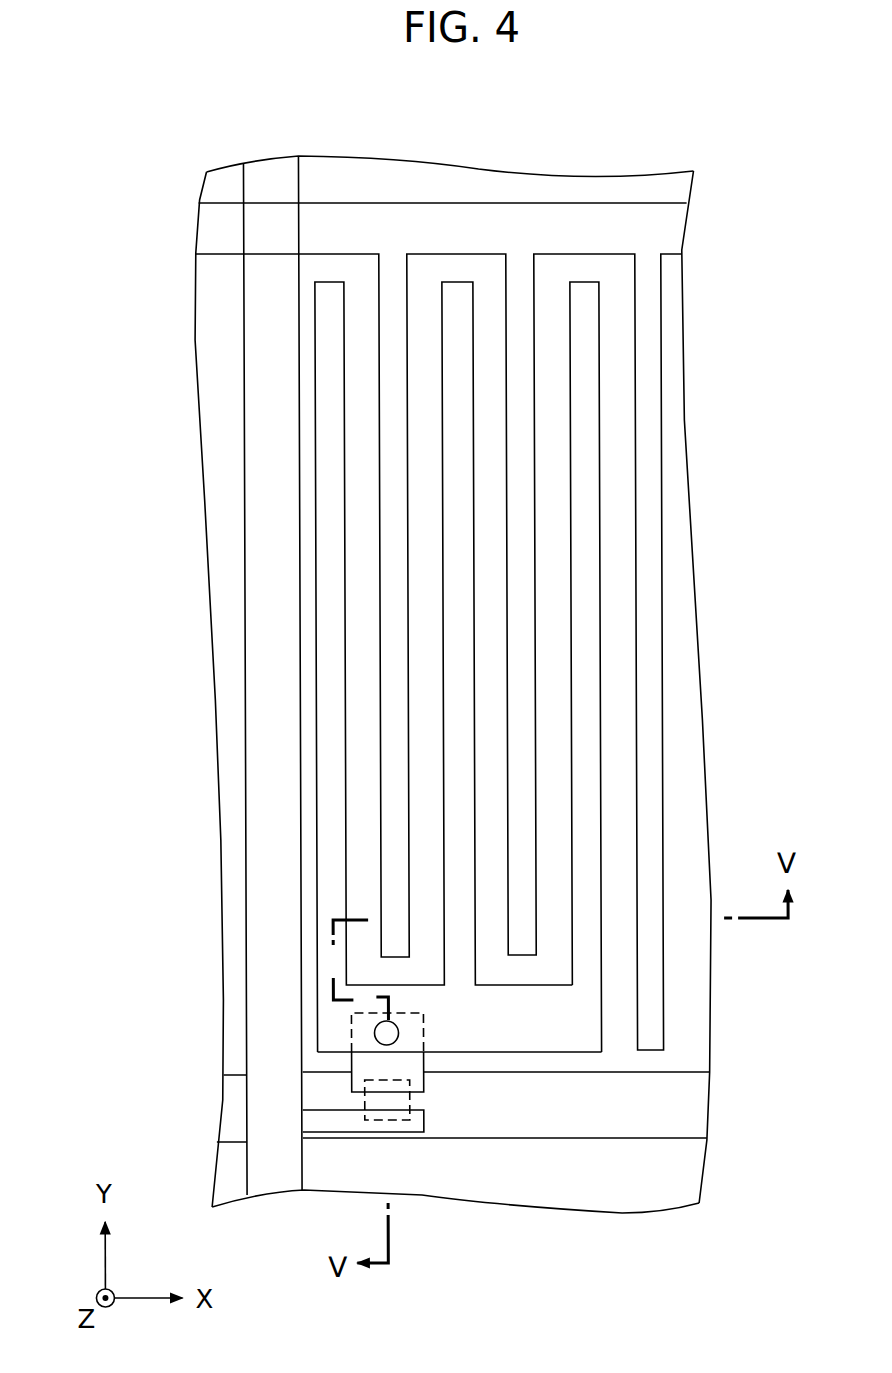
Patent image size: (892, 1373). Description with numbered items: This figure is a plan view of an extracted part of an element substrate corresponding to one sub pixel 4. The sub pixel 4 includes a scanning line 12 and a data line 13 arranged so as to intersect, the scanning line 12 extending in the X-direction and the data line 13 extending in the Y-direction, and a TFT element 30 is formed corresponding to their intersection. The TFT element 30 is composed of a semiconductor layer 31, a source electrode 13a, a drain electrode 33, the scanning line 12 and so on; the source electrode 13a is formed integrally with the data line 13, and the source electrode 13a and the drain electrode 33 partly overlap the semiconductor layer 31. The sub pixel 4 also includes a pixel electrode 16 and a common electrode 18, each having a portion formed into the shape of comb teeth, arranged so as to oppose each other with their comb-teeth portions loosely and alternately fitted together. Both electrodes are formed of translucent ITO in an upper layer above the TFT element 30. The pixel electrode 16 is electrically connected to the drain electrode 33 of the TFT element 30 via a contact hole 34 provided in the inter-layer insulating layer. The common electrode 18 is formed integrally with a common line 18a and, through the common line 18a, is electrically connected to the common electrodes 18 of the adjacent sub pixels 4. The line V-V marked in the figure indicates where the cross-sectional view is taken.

The sub pixel 4 is at (622, 114).
The scanning line 12 is at (693, 1107).
The data line 13 is at (272, 840).
The source electrode 13a is at (413, 1118).
The pixel electrode 16 is at (587, 457).
The common electrode 18 is at (652, 692).
The common line 18a is at (665, 231).
The TFT element 30 is at (374, 1154).
The semiconductor layer 31 is at (402, 1102).
The drain electrode 33 is at (412, 1063).
The contact hole 34 is at (397, 1027).